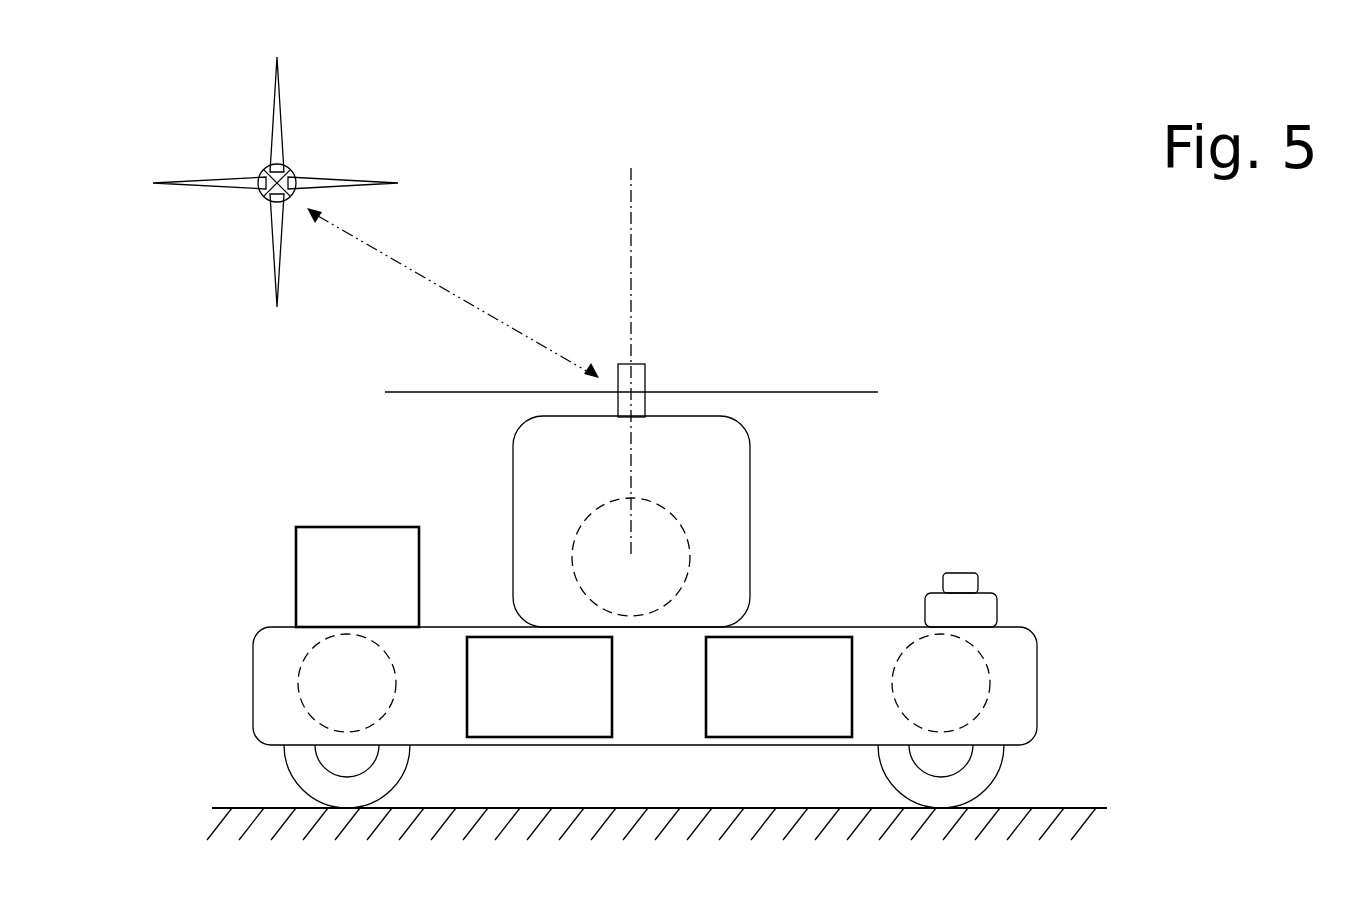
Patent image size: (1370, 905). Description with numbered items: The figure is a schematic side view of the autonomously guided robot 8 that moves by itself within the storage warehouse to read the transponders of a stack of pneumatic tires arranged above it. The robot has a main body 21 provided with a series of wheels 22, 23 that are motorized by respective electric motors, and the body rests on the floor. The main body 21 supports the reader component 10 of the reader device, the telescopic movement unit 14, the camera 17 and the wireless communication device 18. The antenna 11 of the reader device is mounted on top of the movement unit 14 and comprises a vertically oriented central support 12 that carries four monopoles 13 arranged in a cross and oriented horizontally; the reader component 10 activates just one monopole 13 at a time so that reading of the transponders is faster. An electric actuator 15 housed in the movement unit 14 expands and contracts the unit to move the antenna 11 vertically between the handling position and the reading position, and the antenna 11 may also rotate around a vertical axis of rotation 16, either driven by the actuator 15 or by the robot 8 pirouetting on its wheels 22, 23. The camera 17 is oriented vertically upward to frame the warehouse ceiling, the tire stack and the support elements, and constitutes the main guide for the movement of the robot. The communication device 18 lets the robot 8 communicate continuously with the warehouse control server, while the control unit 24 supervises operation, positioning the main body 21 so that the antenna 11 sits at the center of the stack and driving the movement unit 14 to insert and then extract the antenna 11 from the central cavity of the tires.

The autonomously guided robot 8 is at (996, 323).
The reader component 10 is at (552, 692).
The antenna 11 is at (218, 125).
The central support 12 is at (264, 199).
The monopoles 13 is at (281, 136).
The telescopic movement unit 14 is at (585, 463).
The electric actuator 15 is at (663, 508).
The vertical axis of rotation 16 is at (632, 181).
The camera 17 is at (963, 607).
The wireless communication device 18 is at (365, 575).
The main body 21 is at (272, 652).
The wheels 22 is at (300, 775).
The wheels 23 is at (330, 680).
The control unit 24 is at (786, 685).